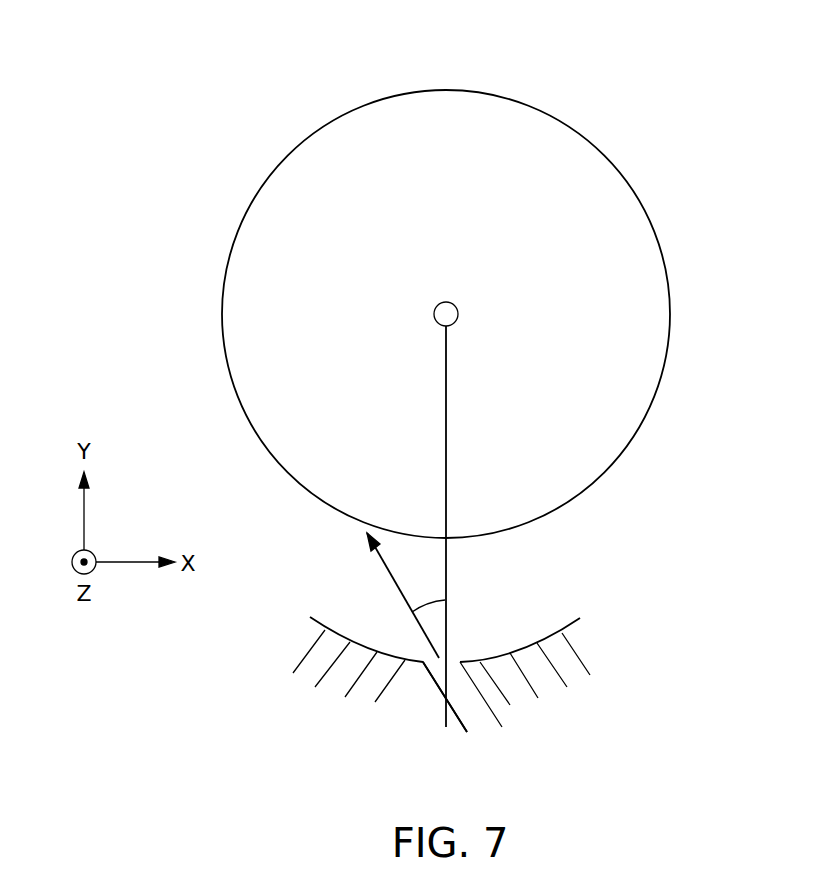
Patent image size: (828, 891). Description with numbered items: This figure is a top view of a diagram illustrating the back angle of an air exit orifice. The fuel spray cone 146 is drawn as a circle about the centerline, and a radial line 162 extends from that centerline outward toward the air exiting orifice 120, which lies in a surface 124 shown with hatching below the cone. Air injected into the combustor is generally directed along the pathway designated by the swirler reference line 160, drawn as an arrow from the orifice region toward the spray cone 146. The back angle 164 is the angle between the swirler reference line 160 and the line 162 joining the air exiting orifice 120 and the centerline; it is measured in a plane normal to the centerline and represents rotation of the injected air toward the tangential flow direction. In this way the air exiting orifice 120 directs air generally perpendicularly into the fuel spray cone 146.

The fuel spray cone 146 is at (450, 90).
The center line of roller 162 is at (447, 385).
The swirler reference line 160 is at (385, 565).
The back angle θ 164 is at (413, 613).
The support surface with hatching 124 is at (573, 650).
The air exiting orifice 120 is at (435, 680).